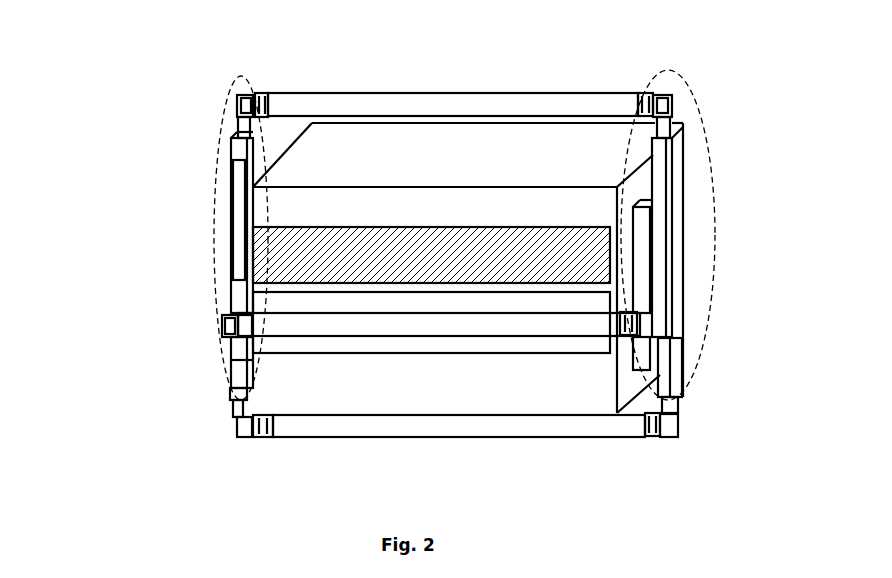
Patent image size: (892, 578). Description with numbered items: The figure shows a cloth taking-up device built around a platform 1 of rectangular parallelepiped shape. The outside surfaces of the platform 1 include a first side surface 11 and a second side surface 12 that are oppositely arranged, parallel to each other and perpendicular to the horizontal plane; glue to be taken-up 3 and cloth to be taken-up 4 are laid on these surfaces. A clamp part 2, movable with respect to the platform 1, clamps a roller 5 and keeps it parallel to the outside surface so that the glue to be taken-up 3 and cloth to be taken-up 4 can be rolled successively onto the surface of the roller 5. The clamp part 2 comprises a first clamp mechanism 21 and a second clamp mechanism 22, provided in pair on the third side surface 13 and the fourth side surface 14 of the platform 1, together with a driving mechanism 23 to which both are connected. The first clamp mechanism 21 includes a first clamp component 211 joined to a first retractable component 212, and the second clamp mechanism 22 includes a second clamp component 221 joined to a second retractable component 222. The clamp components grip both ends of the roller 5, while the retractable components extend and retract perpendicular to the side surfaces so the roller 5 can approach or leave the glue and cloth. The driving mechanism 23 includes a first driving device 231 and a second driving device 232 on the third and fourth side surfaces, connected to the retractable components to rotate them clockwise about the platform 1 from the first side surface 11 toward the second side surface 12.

The platform 1 is at (278, 178).
The first side surface 11 is at (278, 392).
The second side surface 12 is at (678, 145).
The third side surface 13 is at (248, 261).
The fourth side surface 14 is at (627, 392).
The clamp part 2 is at (203, 307).
The first clamp mechanism 21 is at (247, 89).
The first clamp component 211 is at (238, 102).
The first retractable component 212 is at (300, 181).
The second clamp mechanism 22 is at (660, 71).
The second clamp component 221 is at (672, 98).
The second retractable component 222 is at (660, 182).
The driving mechanism 23 is at (222, 384).
The first driving device 231 is at (240, 363).
The second driving device 232 is at (641, 273).
The glue to be taken-up 3 is at (538, 338).
The cloth to be taken-up 4 is at (430, 262).
The roller 5 is at (330, 95).